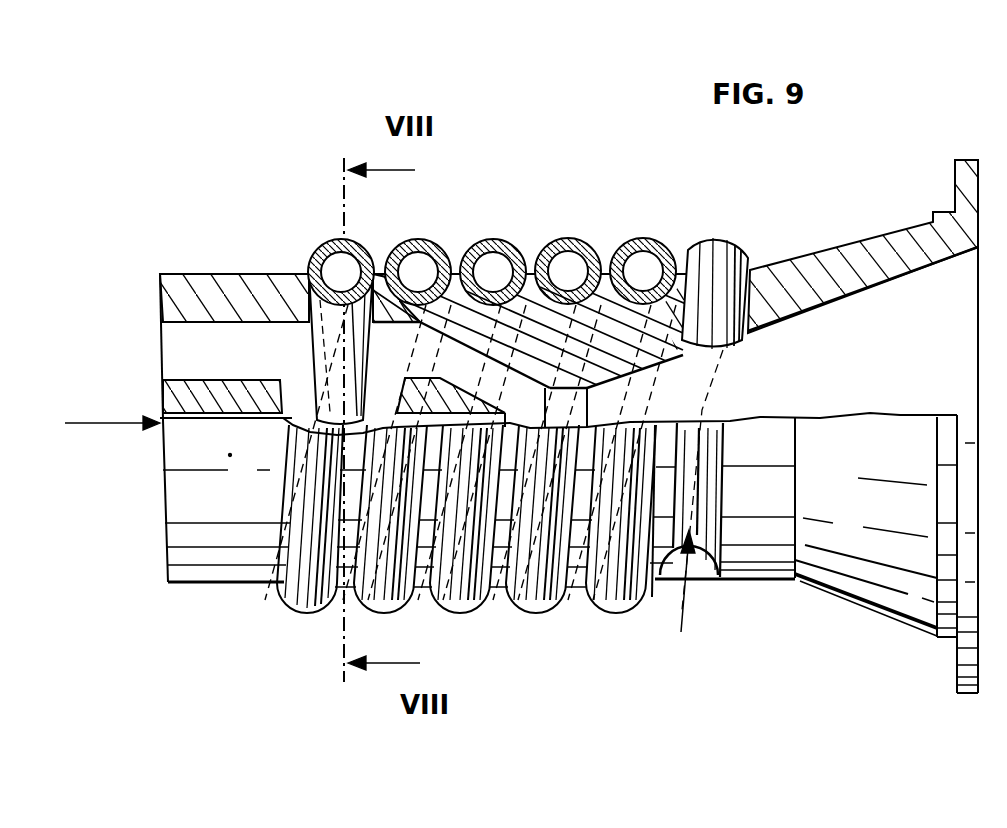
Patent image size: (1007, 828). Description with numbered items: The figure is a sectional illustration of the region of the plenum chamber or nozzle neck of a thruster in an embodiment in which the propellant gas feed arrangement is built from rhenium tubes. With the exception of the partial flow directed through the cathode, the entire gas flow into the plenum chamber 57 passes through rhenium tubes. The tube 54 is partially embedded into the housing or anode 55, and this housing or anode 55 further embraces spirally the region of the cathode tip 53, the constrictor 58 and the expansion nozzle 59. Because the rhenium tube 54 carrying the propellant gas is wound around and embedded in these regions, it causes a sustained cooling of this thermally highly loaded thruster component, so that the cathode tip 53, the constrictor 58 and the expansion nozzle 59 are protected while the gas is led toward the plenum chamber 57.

The cathode tip 53 is at (508, 253).
The tube 54 is at (707, 240).
The housing or anode 55 is at (898, 248).
The plenum chamber 57 is at (287, 343).
The constrictor 58 is at (607, 267).
The expansion nozzle 59 is at (820, 323).